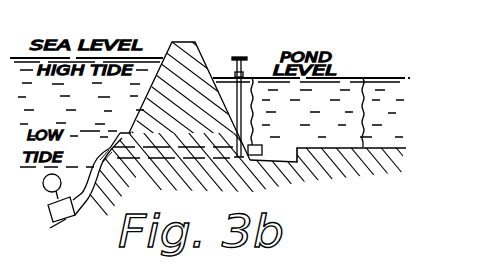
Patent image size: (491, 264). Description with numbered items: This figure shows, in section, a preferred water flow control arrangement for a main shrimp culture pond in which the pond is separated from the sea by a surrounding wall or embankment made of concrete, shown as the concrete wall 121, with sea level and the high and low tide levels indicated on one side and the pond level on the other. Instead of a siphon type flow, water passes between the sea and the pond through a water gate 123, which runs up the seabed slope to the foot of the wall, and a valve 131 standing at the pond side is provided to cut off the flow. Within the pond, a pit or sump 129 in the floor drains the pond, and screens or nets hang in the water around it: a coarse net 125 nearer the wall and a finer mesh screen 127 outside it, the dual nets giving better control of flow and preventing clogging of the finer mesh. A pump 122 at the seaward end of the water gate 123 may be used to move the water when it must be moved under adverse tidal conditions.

The concrete wall 121 is at (184, 41).
The pump 122 is at (44, 189).
The water gate 123 is at (78, 210).
The coarse net 125 is at (254, 77).
The finer mesh screen 127 is at (363, 78).
The pit or sump 129 is at (299, 155).
The valve 131 is at (244, 56).